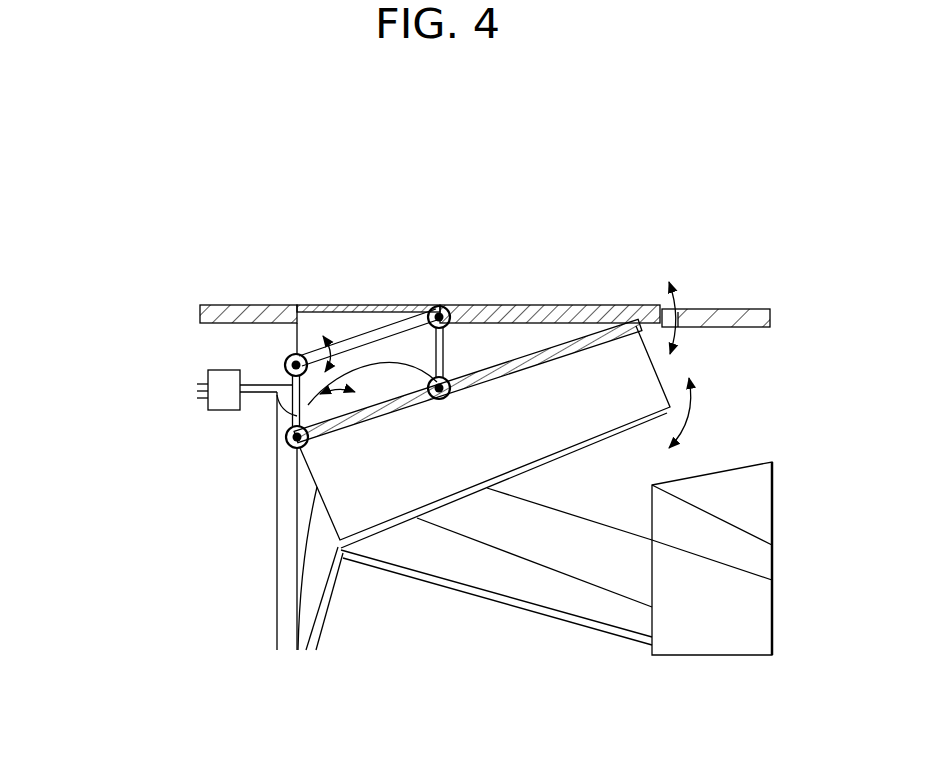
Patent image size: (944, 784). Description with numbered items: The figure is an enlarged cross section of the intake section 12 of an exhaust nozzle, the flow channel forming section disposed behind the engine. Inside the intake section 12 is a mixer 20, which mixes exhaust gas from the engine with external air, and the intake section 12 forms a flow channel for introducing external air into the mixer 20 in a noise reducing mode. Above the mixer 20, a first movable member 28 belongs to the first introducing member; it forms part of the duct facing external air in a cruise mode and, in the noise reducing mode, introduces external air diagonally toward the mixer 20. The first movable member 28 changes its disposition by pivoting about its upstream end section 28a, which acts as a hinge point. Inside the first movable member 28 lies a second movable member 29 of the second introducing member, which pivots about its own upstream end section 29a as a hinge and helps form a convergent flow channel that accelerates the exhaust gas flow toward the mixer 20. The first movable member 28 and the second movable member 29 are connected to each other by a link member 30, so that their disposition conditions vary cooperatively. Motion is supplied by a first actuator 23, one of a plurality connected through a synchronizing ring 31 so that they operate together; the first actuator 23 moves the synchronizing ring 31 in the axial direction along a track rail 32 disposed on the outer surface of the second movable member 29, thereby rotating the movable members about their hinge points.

The intake section 12 is at (531, 214).
The mixer 20 is at (735, 468).
The first actuator 23 is at (207, 403).
The first movable member 28 is at (608, 305).
The end section 28a is at (301, 354).
The second movable member 29 is at (585, 447).
The end section 29a is at (286, 442).
The link member 30 is at (447, 347).
The synchronizing ring 31 is at (277, 578).
The track rail 32 is at (397, 360).